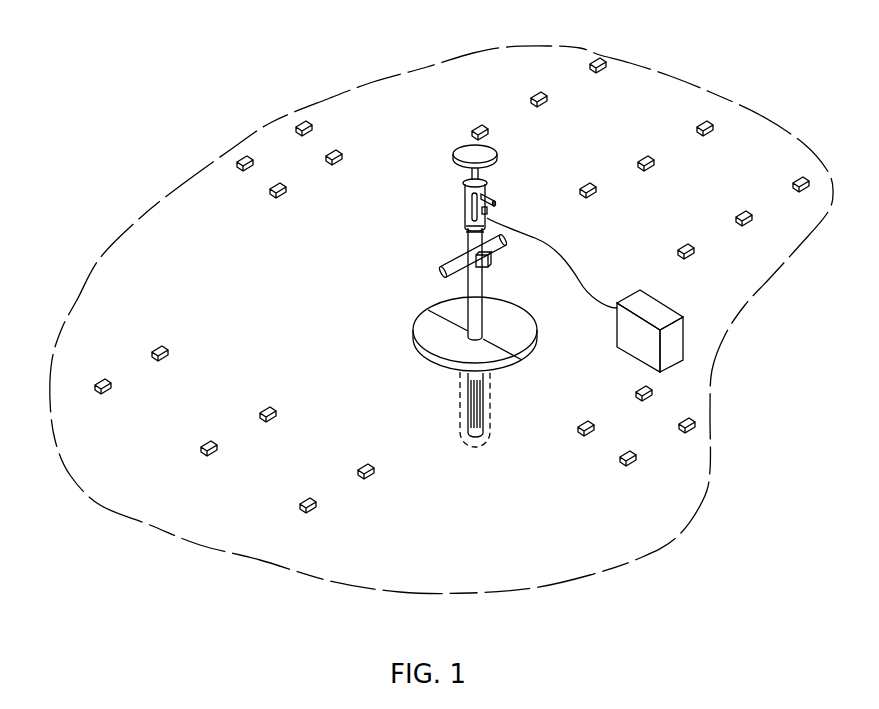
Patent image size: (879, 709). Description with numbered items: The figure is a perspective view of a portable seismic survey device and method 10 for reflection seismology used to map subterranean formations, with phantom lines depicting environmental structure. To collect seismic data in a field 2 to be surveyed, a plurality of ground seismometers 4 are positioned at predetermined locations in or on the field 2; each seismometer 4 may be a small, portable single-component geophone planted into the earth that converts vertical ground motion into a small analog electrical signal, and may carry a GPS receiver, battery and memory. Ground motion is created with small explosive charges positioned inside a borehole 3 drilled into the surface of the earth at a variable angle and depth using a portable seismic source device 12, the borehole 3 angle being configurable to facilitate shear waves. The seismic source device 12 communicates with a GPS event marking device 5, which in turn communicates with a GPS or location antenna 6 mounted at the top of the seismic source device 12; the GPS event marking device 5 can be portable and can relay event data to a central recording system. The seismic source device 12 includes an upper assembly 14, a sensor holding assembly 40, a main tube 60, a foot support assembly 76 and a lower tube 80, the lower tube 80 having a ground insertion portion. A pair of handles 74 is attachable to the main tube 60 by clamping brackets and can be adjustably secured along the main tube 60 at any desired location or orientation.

The portable seismic survey device and method 10 is at (239, 76).
The field 2 is at (120, 522).
The ground seismometers 4 is at (530, 96).
The GPS event marking device 5 is at (675, 310).
The GPS or location antenna 6 is at (473, 143).
The upper assembly 14 is at (465, 200).
The sensor holding assembly 40 is at (488, 195).
The main tube 60 is at (467, 237).
The portable seismic source device 12 is at (455, 288).
The handles 74 is at (450, 258).
The foot support assembly 76 is at (517, 333).
The lower tube 80 is at (483, 407).
The borehole 3 is at (462, 427).